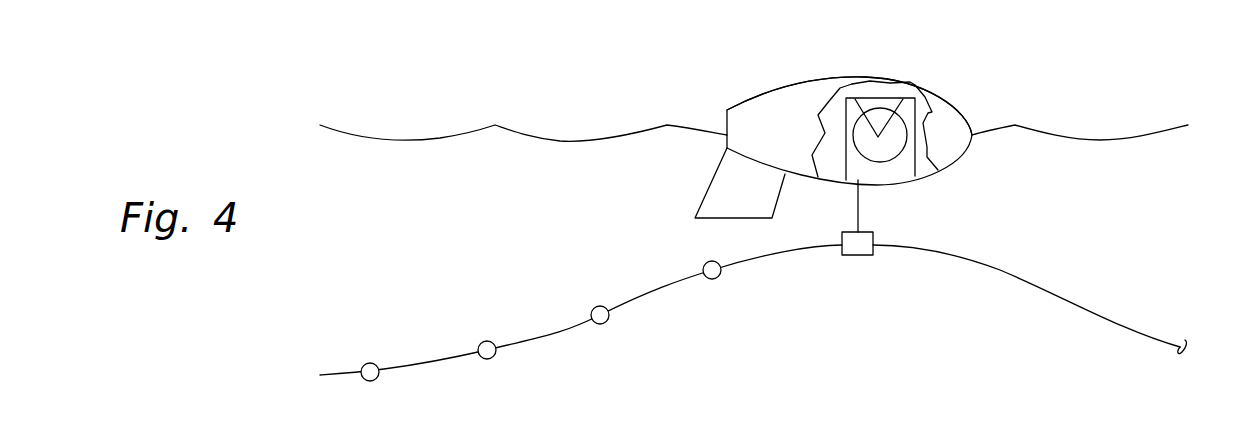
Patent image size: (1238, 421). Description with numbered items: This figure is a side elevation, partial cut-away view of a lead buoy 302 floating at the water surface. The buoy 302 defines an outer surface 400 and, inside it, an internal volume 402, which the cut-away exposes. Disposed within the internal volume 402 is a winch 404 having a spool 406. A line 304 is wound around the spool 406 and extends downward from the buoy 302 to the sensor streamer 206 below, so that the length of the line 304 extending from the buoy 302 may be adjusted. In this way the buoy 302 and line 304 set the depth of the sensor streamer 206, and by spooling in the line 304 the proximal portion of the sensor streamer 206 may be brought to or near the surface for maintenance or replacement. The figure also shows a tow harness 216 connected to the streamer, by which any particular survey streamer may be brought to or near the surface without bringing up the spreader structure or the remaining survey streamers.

The outer surface 400 is at (753, 107).
The lead buoy 302 is at (815, 80).
The internal volume 402 is at (923, 120).
The winch 404 is at (890, 104).
The spool 406 is at (862, 132).
The line 304 is at (860, 212).
The sensor streamer 206 is at (555, 330).
The tow harness 216 is at (1085, 310).